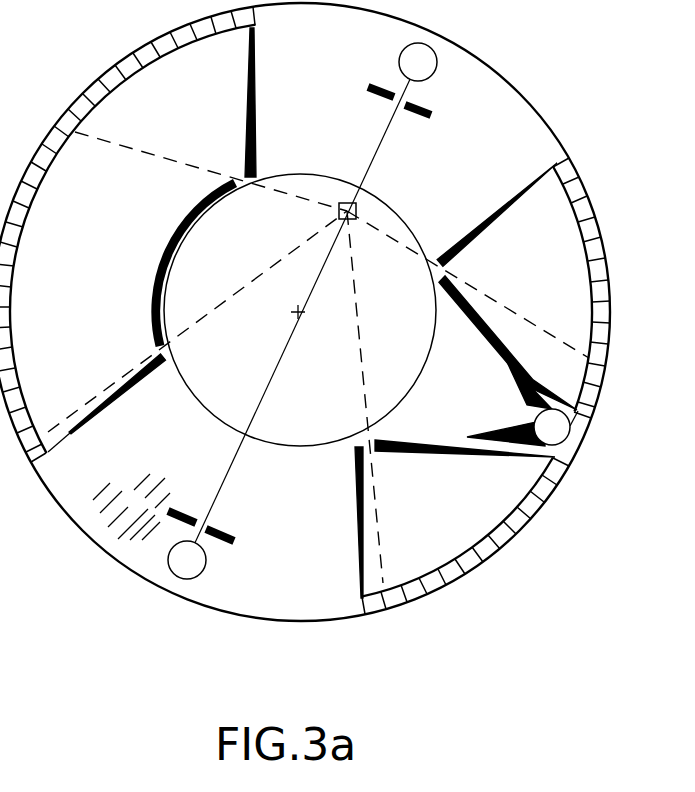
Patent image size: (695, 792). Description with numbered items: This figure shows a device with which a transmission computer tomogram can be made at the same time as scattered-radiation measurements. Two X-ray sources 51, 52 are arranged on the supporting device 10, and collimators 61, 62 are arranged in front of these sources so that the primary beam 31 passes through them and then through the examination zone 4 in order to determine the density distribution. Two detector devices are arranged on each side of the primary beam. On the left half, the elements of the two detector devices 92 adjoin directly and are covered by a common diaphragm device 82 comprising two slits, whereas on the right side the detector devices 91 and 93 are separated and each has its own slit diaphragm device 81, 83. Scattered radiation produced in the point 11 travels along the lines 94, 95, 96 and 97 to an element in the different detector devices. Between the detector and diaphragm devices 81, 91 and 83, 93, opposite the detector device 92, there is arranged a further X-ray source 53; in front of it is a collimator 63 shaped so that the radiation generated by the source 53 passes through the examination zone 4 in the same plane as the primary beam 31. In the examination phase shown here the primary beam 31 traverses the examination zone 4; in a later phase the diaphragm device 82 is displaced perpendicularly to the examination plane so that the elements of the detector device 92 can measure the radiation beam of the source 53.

The examination zone 4 is at (272, 441).
The supporting device 10 is at (131, 507).
The point 11 is at (357, 211).
The primary beam 31 is at (367, 172).
The X-ray source 51 is at (204, 569).
The X-ray source 52 is at (432, 71).
The X-ray source 53 is at (572, 431).
The collimator 61 is at (235, 536).
The collimator 62 is at (433, 114).
The collimator 63 is at (513, 428).
The slit diaphragm device 81 is at (497, 214).
The diaphragm device 82 is at (254, 150).
The slit diaphragm device 83 is at (405, 442).
The detector device 91 is at (611, 320).
The detector devices 92 is at (107, 72).
The detector device 93 is at (497, 553).
The line 94 is at (146, 146).
The line 95 is at (103, 391).
The line 96 is at (517, 323).
The line 97 is at (379, 535).